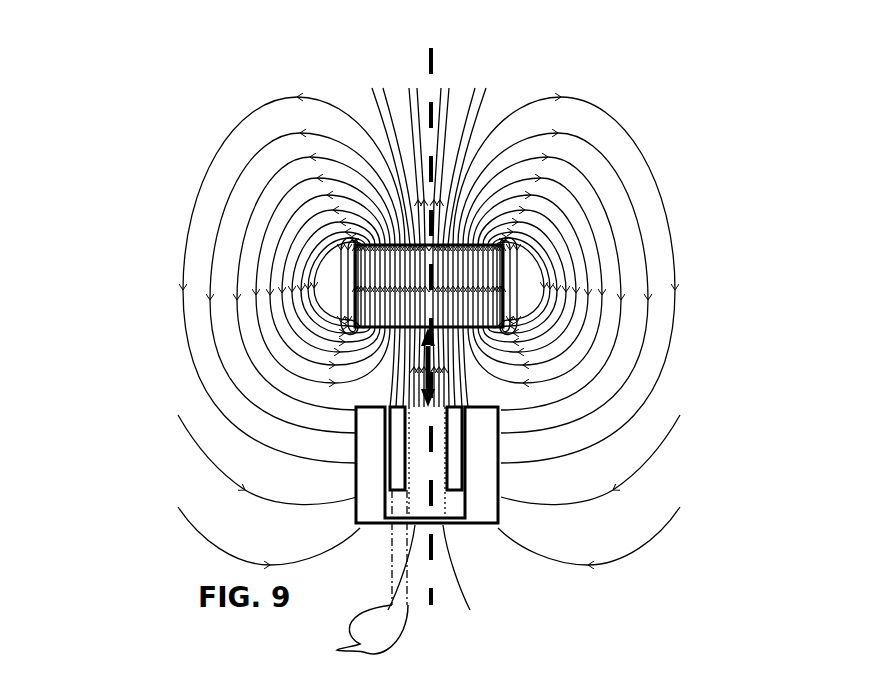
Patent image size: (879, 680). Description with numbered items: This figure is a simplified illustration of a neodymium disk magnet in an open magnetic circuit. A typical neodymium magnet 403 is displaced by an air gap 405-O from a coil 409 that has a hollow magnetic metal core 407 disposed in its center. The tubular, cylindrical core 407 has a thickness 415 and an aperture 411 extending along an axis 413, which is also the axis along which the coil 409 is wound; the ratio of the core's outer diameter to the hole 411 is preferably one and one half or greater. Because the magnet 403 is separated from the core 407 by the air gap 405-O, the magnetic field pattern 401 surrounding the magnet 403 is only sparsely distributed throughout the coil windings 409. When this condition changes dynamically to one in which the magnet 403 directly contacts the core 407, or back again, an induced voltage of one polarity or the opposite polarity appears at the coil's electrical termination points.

The magnetic field lines 401 is at (413, 177).
The neodymium magnet 403 is at (370, 290).
The air gap 405-O is at (438, 362).
The hollow magnetic metal core 407 is at (388, 455).
The coil 409 is at (366, 474).
The aperture 411 is at (420, 463).
The axis 413 is at (432, 46).
The thickness 415 is at (337, 650).